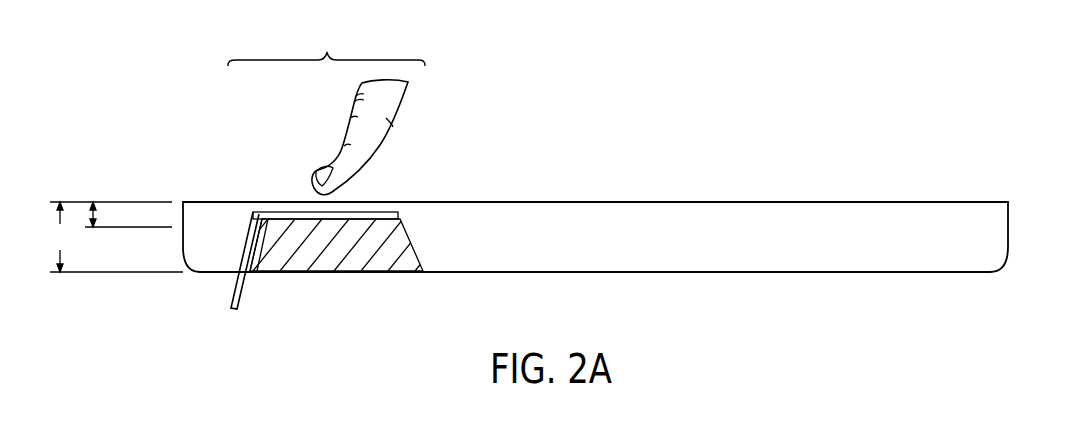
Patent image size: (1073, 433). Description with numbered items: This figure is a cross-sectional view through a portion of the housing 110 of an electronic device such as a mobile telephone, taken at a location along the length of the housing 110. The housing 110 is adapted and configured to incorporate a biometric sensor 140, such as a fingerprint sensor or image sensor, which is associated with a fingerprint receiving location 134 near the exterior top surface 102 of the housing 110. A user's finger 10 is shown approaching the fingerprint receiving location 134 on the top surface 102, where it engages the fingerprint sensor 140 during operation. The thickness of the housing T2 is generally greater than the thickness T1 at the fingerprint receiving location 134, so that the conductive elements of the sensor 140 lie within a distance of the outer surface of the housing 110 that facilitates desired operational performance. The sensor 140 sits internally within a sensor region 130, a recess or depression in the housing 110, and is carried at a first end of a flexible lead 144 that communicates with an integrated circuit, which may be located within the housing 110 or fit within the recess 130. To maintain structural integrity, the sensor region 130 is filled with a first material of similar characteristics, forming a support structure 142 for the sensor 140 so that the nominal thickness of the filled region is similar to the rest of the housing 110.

The finger 10 is at (380, 145).
The top surface 102 is at (648, 202).
The housing 110 is at (993, 228).
The sensor region 130 is at (285, 268).
The fingerprint receiving location 134 is at (326, 46).
The biometric sensor 140 is at (259, 272).
The support structure 142 is at (331, 252).
The flexible lead 144 is at (232, 292).
The thickness at the fingerprint receiving location T1 is at (91, 196).
The thickness of the housing T2 is at (116, 237).